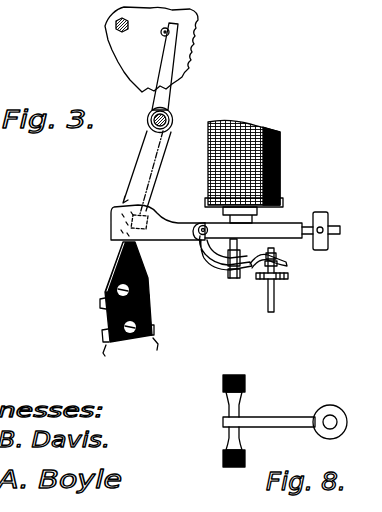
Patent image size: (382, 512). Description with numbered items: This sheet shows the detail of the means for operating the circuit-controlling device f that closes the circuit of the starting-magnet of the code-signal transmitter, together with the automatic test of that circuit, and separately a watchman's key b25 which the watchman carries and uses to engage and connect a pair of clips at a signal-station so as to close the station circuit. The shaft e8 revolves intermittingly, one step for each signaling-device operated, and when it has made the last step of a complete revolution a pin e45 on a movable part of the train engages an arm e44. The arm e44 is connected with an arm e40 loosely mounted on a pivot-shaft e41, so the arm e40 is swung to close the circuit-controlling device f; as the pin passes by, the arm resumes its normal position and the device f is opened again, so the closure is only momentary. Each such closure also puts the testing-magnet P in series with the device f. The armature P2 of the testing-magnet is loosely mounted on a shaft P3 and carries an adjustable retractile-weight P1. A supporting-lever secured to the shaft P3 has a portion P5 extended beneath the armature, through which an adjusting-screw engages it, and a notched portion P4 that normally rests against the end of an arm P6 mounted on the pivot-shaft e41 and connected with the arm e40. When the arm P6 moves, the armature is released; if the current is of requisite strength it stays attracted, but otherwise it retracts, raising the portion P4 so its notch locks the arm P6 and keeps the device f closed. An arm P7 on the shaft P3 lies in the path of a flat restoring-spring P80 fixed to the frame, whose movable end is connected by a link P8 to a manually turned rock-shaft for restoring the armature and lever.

In FIG. 3, the shaft e8 is at (116, 25).
In FIG. 3, the arm e44 is at (176, 72).
In FIG. 3, the pin e45 is at (162, 38).
In FIG. 3, the pivot-shaft e41 is at (172, 118).
In FIG. 3, the arm e40 is at (150, 182).
In FIG. 3, the arm P6 is at (137, 159).
In FIG. 3, the portion of supporting-lever P4 is at (181, 218).
In FIG. 3, the armature P2 is at (295, 223).
In FIG. 3, the retractile-weight P1 is at (330, 214).
In FIG. 3, the shaft P3 is at (203, 245).
In FIG. 3, the portion of supporting-lever P5 is at (216, 262).
In FIG. 3, the arm P7 is at (257, 268).
In FIG. 3, the flat restoring-spring P80 is at (290, 276).
In FIG. 3, the link P8 is at (276, 307).
In FIG. 3, the testing-magnet P is at (284, 167).
In FIG. 3, the circuit-controlling device f is at (105, 320).
In FIG. 8, the watchman's key b25 is at (282, 413).